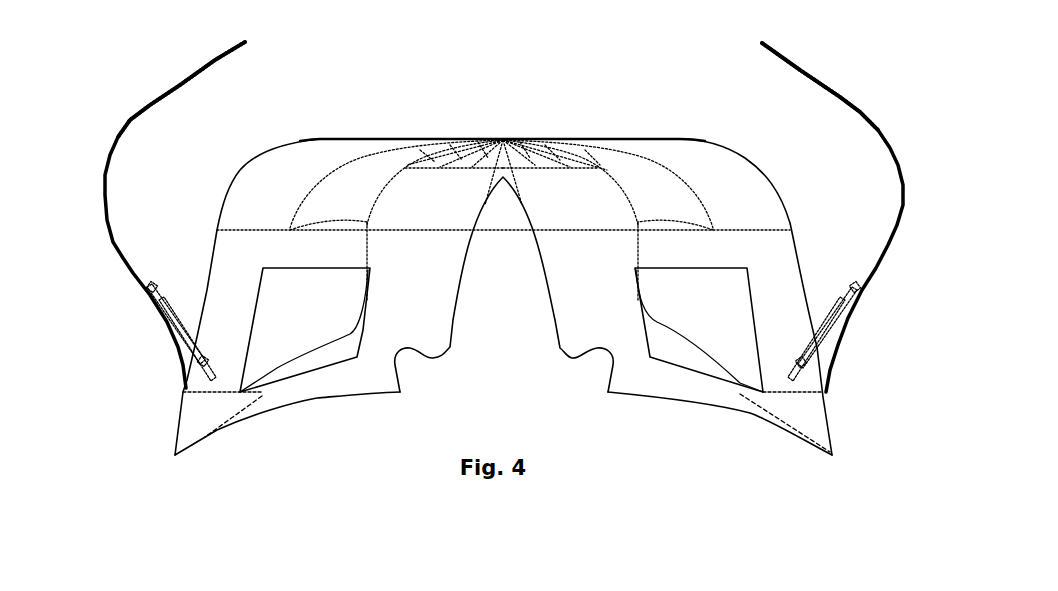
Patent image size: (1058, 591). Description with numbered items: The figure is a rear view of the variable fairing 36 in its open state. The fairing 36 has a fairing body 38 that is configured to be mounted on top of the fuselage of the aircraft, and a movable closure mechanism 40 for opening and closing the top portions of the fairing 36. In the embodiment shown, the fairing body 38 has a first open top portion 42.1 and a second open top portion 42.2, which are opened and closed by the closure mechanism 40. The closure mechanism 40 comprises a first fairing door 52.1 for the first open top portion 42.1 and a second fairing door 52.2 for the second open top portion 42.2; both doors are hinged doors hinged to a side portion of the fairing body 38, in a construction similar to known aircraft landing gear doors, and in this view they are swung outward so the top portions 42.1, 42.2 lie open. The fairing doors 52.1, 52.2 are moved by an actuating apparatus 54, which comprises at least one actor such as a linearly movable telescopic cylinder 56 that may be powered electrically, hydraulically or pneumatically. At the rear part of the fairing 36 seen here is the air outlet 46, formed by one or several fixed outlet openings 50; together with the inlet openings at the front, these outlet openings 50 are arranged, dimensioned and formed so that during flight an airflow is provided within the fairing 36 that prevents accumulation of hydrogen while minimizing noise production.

The fairing 36 is at (792, 472).
The fairing body 38 is at (391, 310).
The movable closure mechanism 40 is at (160, 64).
The first open top portion 42.1 is at (710, 120).
The second open top portion 42.2 is at (312, 120).
The air outlet 46 is at (308, 346).
The fixed outlet openings 50 is at (277, 337).
The first fairing door 52.1 is at (845, 96).
The second fairing door 52.2 is at (143, 89).
The actuating apparatus 54 is at (182, 250).
The telescopic cylinder 56 is at (185, 330).